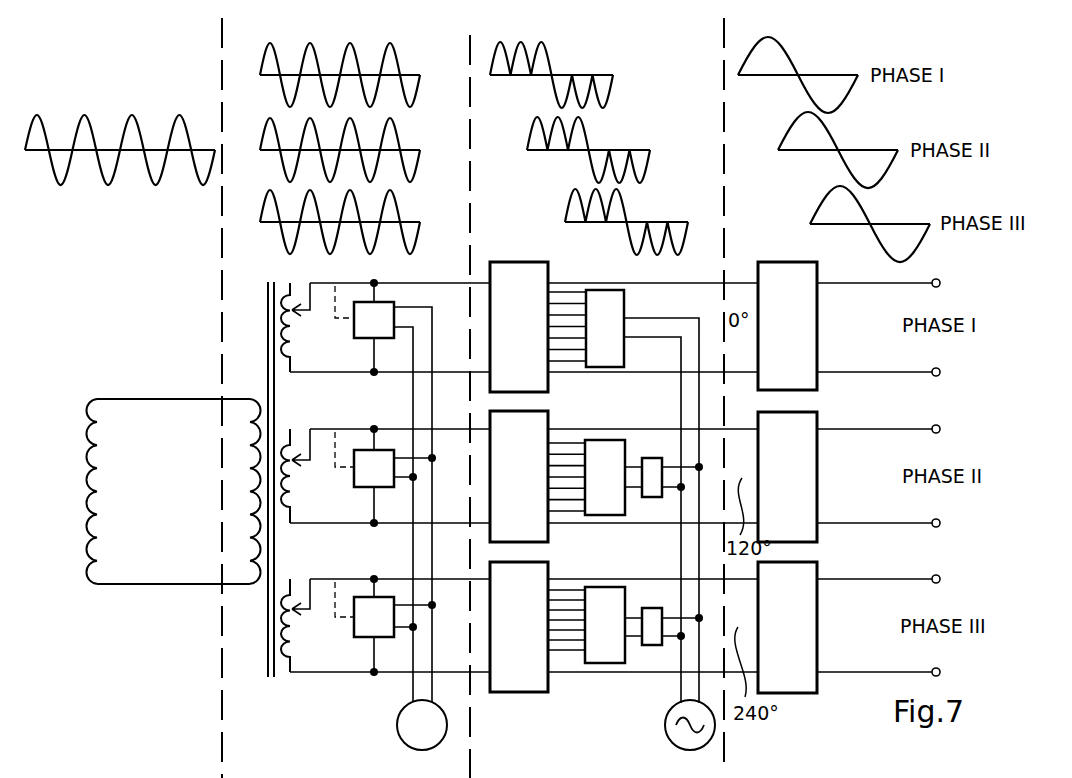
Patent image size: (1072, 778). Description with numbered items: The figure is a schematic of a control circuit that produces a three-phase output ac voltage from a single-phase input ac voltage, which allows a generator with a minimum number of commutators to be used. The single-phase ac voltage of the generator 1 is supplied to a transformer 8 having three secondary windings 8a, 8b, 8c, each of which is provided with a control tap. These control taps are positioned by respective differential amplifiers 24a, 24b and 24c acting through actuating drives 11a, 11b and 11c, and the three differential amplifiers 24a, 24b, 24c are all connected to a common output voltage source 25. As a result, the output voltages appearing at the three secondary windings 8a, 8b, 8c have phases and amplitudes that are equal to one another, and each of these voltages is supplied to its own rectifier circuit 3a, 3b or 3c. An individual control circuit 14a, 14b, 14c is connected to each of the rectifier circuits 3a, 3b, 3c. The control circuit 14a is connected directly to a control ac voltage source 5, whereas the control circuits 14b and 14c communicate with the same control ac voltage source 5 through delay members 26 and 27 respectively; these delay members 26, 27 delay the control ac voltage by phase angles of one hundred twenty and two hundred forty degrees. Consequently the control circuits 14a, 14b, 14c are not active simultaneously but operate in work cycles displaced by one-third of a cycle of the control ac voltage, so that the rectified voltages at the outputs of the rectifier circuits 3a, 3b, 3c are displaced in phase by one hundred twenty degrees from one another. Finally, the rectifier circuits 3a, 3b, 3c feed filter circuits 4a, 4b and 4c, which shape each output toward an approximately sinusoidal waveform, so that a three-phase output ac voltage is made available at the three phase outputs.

The generator 1 is at (112, 568).
The transformer 8 is at (245, 583).
The secondary winding 8a is at (296, 350).
The secondary winding 8b is at (296, 502).
The secondary winding 8c is at (296, 652).
The actuating drive 11a is at (335, 303).
The actuating drive 11b is at (335, 455).
The actuating drive 11c is at (335, 603).
The differential amplifier 24a is at (370, 320).
The differential amplifier 24b is at (370, 468).
The differential amplifier 24c is at (370, 618).
The output voltage source 25 is at (403, 743).
The rectifier circuit 3a is at (519, 327).
The rectifier circuit 3b is at (519, 476).
The rectifier circuit 3c is at (519, 627).
The control circuit 14a is at (623, 496).
The control circuit 14b is at (623, 477).
The control circuit 14c is at (623, 625).
The delay member 26 is at (651, 466).
The delay member 27 is at (652, 616).
The control ac voltage source 5 is at (671, 742).
The filter circuit 4a is at (787, 326).
The filter circuit 4b is at (787, 477).
The filter circuit 4c is at (787, 627).